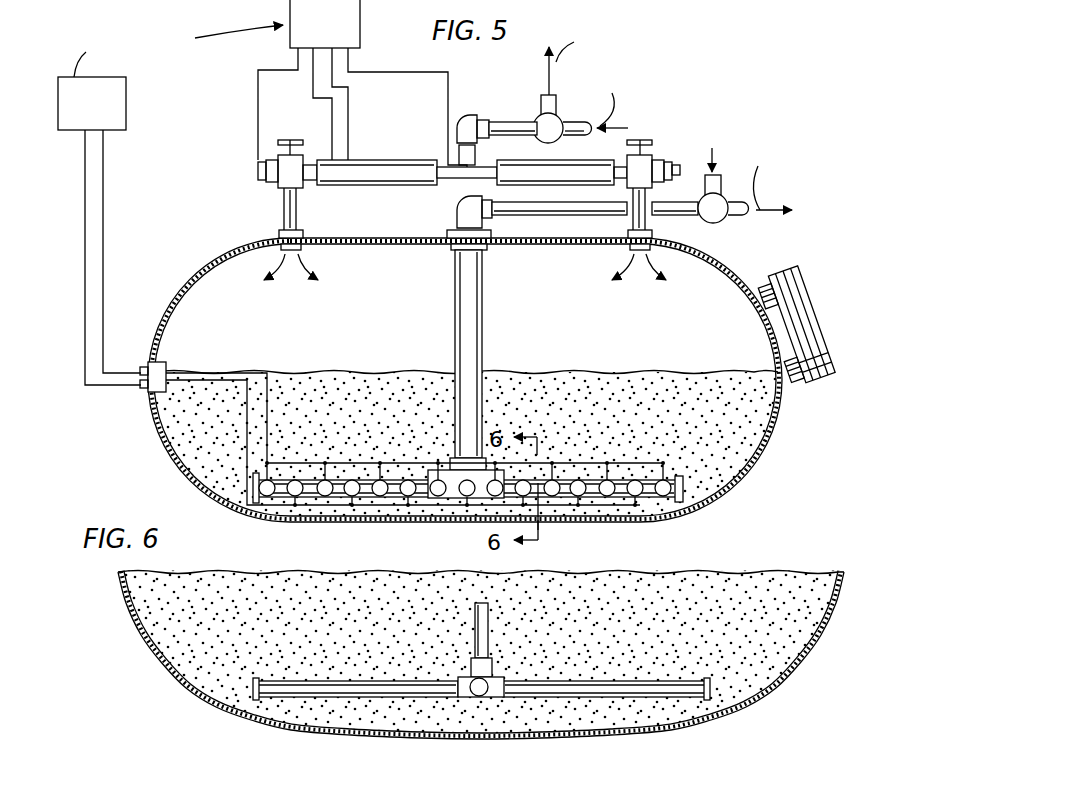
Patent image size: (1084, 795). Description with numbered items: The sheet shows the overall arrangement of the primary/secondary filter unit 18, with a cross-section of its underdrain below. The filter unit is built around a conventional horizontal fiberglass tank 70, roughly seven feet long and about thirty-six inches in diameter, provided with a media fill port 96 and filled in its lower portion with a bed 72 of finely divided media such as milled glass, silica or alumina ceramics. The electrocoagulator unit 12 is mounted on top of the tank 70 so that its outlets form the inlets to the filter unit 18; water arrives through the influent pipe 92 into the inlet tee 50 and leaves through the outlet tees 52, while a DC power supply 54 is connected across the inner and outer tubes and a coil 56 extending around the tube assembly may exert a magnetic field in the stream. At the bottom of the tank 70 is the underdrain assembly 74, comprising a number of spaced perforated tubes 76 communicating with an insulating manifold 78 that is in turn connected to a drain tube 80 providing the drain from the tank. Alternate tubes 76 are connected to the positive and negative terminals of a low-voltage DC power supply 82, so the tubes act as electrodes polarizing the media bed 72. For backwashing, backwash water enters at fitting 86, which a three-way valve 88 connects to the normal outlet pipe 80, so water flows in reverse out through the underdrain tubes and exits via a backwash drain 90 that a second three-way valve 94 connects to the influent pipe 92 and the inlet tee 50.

In FIG. 5, the electrocoagulator unit 12 is at (240, 162).
In FIG. 5, the primary/secondary filter unit 18 is at (769, 461).
In FIG. 5, the inlet tee 50 is at (452, 183).
In FIG. 5, the outlet tee 52 is at (305, 152).
In FIG. 5, the DC power supply 54 is at (362, 14).
In FIG. 5, the coil 56 is at (393, 160).
In FIG. 5, the tank 70 is at (194, 278).
In FIG. 5, the bed of finely-divided media 72 is at (190, 440).
In FIG. 6, the bed of finely-divided media 72 is at (275, 595).
In FIG. 5, the underdrain assembly 74 is at (692, 498).
In FIG. 6, the underdrain assembly 74 is at (716, 690).
In FIG. 5, the underdrain tubes 76 is at (390, 508).
In FIG. 6, the underdrain tubes 76 is at (571, 686).
In FIG. 6, the manifold 78 is at (476, 696).
In FIG. 5, the drain tube 80 is at (483, 283).
In FIG. 6, the drain tube 80 is at (489, 632).
In FIG. 5, the power supply 82 is at (127, 95).
In FIG. 5, the fitting 86 is at (706, 193).
In FIG. 5, the 3-way valve 88 is at (722, 222).
In FIG. 5, the backwash drain 90 is at (541, 100).
In FIG. 5, the influent pipe 92 is at (500, 136).
In FIG. 5, the second 3-way valve 94 is at (560, 137).
In FIG. 5, the media fill port 96 is at (803, 300).